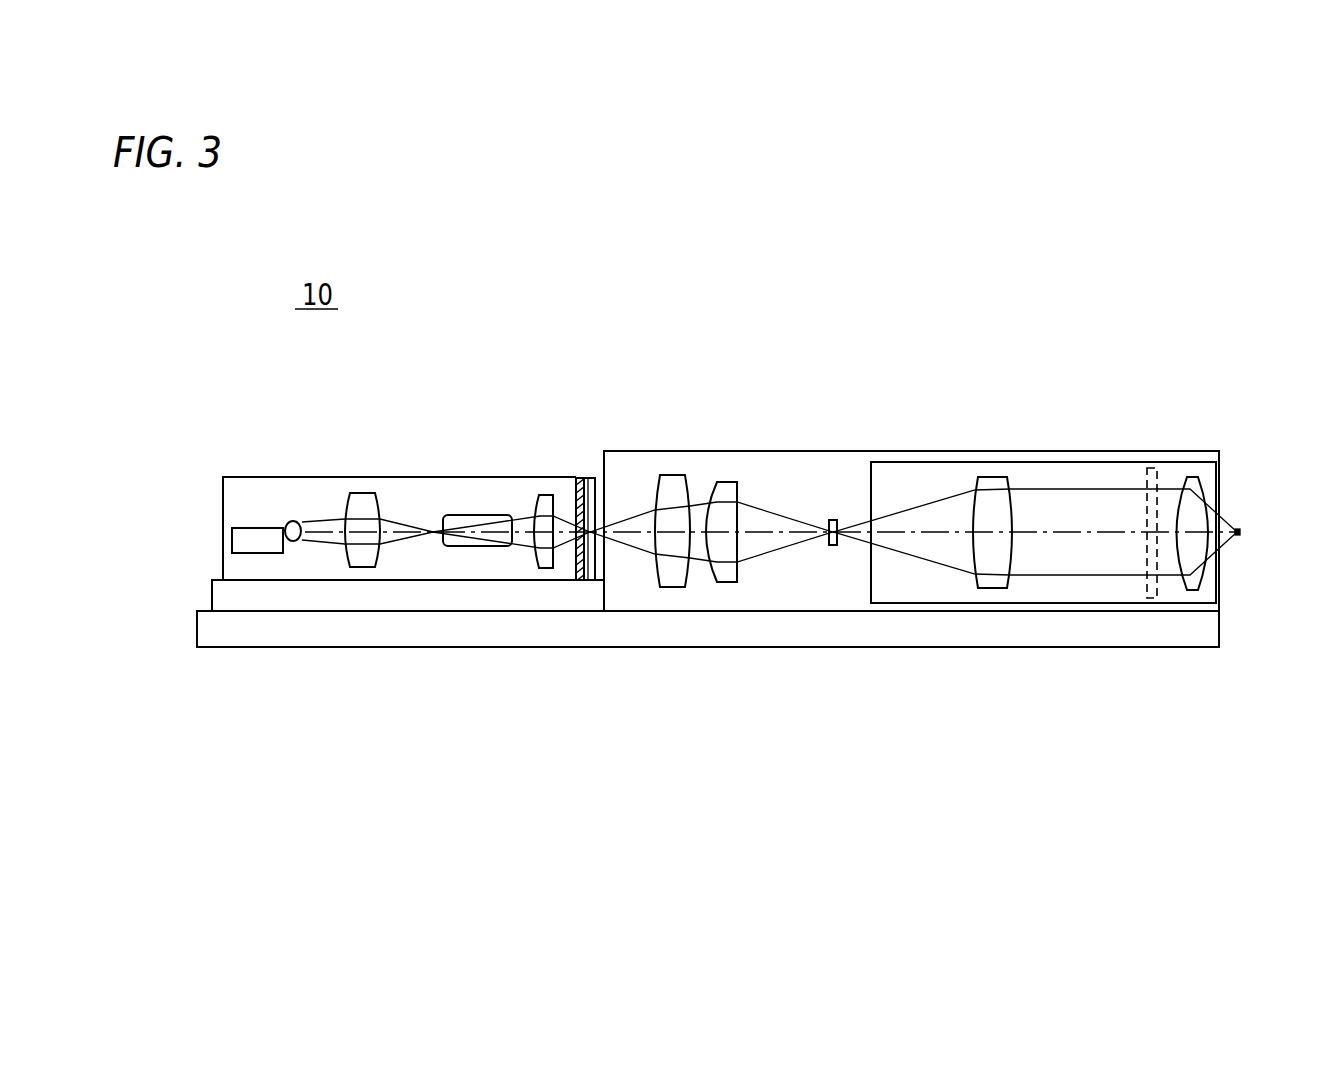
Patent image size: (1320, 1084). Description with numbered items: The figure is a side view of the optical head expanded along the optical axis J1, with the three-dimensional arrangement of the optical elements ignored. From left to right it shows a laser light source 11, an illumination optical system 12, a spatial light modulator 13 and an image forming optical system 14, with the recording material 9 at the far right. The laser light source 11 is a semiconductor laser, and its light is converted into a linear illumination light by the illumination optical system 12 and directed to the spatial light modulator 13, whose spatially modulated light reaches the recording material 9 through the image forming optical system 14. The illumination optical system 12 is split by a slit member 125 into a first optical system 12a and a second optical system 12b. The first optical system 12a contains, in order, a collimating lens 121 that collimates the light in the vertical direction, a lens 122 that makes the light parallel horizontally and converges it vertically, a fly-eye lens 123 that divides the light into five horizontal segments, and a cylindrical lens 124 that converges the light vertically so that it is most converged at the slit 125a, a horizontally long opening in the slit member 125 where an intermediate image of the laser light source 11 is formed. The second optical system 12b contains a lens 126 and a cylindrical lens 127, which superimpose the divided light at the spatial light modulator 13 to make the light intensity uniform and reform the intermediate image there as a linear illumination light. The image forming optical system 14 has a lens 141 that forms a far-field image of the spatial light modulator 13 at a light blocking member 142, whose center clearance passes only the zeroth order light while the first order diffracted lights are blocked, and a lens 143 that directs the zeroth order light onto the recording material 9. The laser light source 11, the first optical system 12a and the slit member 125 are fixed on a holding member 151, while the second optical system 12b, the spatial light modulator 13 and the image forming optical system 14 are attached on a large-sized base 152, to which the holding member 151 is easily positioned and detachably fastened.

The laser light source 11 is at (255, 530).
The illumination optical system 12 is at (493, 440).
The first optical system 12a is at (387, 717).
The second optical system 12b is at (725, 737).
The spatial light modulator 13 is at (833, 519).
The image forming optical system 14 is at (1058, 430).
The recording material 9 is at (1239, 527).
The optical axis J1 is at (403, 526).
The collimating lens 121 is at (293, 541).
The lens 122 is at (362, 568).
The fly-eye lens 123 is at (472, 548).
The cylindrical lens 124 is at (540, 569).
The slit member 125 is at (578, 581).
The slit 125a is at (590, 536).
The lens 126 is at (678, 588).
The cylindrical lens 127 is at (727, 583).
The lens 141 is at (993, 589).
The light blocking member 142 is at (1148, 599).
The lens 143 is at (1193, 591).
The holding member 151 is at (212, 592).
The base 152 is at (197, 627).